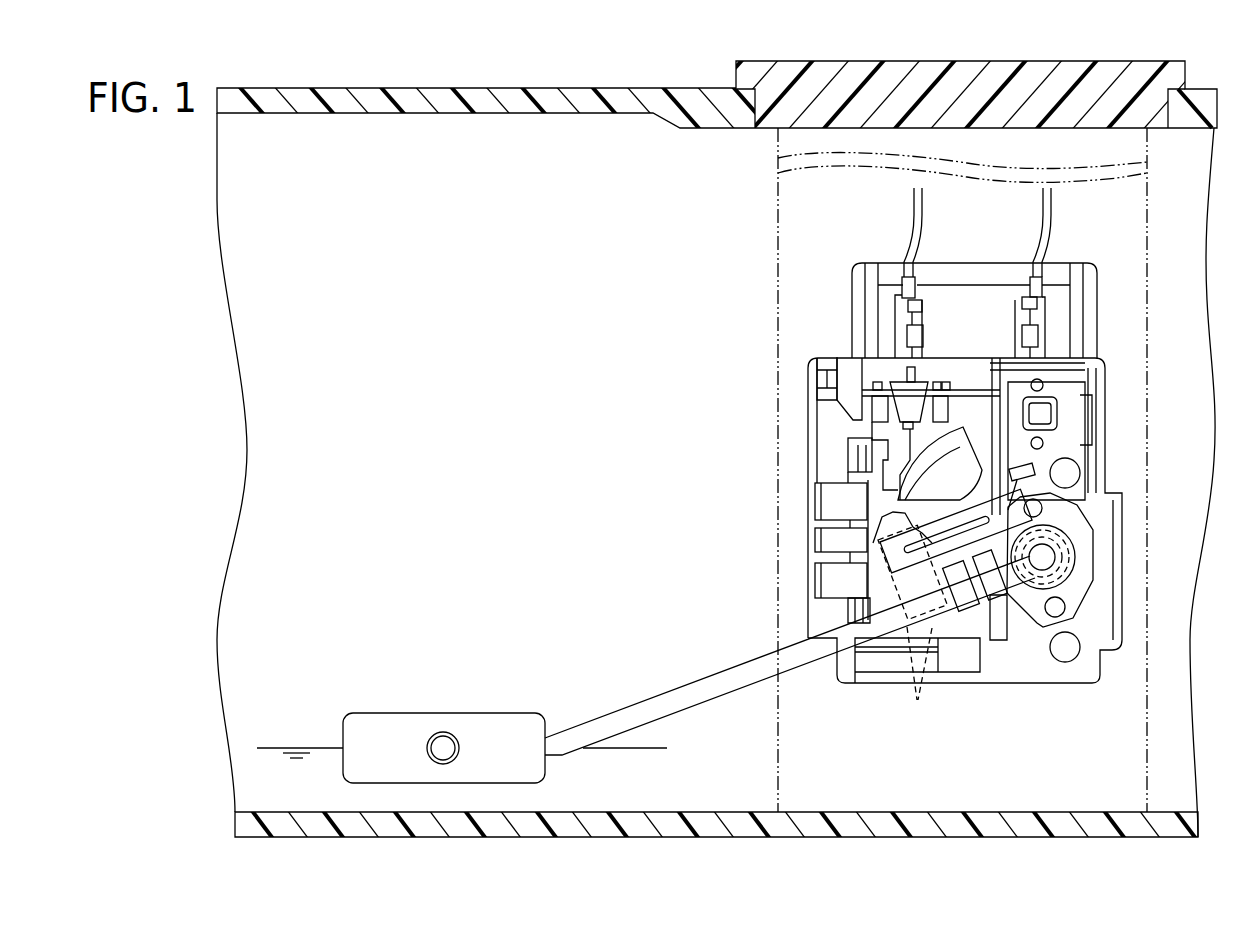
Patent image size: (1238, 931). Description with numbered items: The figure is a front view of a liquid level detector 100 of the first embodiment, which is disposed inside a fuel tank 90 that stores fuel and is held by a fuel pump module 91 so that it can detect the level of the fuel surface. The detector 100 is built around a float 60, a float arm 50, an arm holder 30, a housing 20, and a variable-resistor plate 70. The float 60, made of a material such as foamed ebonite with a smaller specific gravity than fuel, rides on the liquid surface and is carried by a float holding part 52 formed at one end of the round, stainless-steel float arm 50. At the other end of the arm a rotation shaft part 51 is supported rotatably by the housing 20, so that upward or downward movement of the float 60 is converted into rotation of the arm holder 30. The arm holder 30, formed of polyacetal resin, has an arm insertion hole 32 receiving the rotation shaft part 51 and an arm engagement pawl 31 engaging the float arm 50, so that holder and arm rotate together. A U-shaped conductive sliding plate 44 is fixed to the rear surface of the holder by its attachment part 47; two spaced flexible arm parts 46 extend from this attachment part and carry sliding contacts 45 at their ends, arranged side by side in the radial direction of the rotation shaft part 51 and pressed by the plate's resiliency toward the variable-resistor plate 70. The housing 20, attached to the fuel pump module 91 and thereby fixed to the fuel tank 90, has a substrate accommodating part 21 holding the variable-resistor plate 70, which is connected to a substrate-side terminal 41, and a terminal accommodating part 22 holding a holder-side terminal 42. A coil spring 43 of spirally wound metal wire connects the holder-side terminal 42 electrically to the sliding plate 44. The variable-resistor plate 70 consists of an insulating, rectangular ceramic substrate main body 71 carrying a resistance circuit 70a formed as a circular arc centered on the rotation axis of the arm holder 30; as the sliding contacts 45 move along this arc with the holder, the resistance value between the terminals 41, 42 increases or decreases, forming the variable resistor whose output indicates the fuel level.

The fuel tank 90 is at (632, 88).
The fuel pump module 91 is at (777, 325).
The liquid level detector 100 is at (1090, 265).
The housing 20 is at (808, 396).
The substrate accommodating part 21 is at (977, 422).
The terminal accommodating part 22 is at (1090, 380).
The substrate-side terminal 41 is at (913, 300).
The holder-side terminal 42 is at (1040, 300).
The sliding plate 44 is at (870, 558).
The sliding contact 45 is at (917, 698).
The flexible arm part 46 is at (865, 588).
The attachment part 47 is at (870, 520).
The variable-resistor plate 70 is at (872, 430).
The resistance circuit 70a is at (923, 500).
The substrate main body 71 is at (948, 412).
The arm holder 30 is at (1093, 540).
The arm engagement pawl 31 is at (972, 610).
The arm insertion hole 32 is at (1060, 557).
The coil spring 43 is at (1080, 572).
The float arm 50 is at (582, 728).
The rotation shaft part 51 is at (443, 735).
The float holding part 52 is at (1052, 662).
The float 60 is at (505, 713).